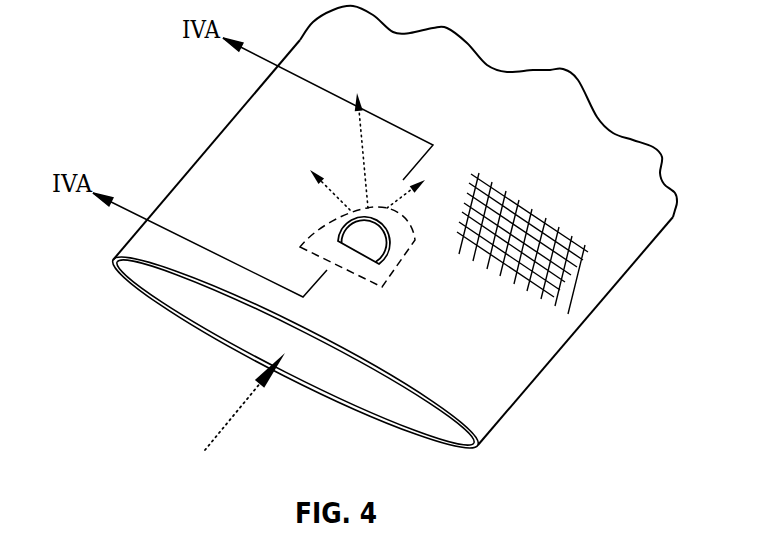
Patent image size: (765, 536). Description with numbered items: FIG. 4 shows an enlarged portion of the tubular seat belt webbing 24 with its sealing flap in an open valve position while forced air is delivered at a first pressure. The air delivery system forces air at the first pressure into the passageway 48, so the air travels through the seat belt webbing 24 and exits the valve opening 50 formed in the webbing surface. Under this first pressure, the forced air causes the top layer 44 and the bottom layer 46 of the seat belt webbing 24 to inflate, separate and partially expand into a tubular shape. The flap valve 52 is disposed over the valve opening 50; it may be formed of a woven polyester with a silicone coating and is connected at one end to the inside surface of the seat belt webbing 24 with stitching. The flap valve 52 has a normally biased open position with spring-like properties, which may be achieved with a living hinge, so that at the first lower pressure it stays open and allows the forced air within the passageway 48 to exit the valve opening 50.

The seat belt webbing 24 is at (485, 362).
The top layer 44 is at (232, 293).
The bottom layer 46 is at (360, 415).
The passageway 48 is at (253, 332).
The valve opening 50 is at (372, 247).
The flap valve 52 is at (368, 280).